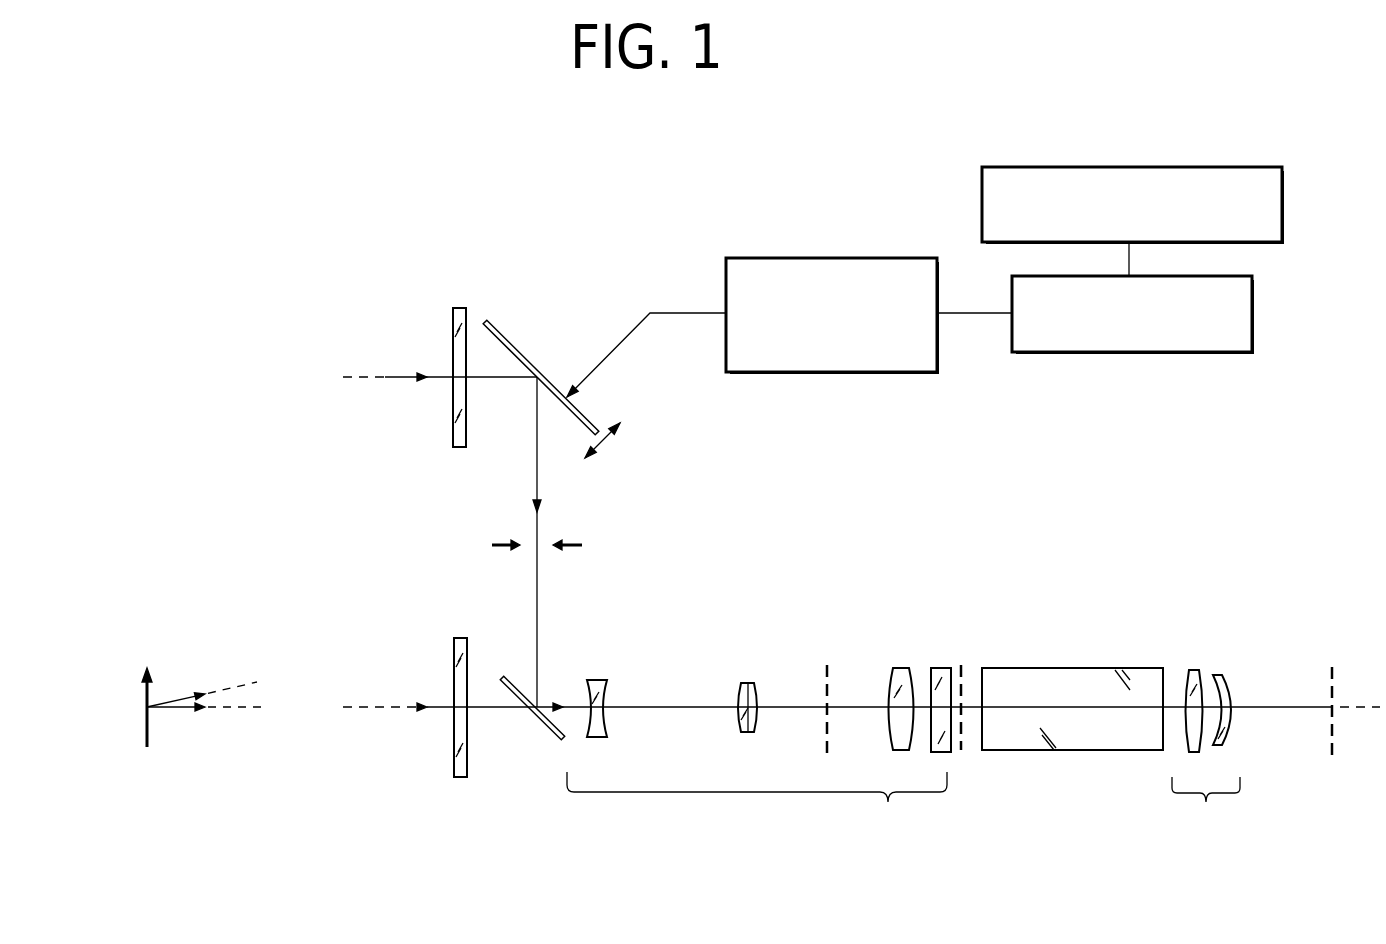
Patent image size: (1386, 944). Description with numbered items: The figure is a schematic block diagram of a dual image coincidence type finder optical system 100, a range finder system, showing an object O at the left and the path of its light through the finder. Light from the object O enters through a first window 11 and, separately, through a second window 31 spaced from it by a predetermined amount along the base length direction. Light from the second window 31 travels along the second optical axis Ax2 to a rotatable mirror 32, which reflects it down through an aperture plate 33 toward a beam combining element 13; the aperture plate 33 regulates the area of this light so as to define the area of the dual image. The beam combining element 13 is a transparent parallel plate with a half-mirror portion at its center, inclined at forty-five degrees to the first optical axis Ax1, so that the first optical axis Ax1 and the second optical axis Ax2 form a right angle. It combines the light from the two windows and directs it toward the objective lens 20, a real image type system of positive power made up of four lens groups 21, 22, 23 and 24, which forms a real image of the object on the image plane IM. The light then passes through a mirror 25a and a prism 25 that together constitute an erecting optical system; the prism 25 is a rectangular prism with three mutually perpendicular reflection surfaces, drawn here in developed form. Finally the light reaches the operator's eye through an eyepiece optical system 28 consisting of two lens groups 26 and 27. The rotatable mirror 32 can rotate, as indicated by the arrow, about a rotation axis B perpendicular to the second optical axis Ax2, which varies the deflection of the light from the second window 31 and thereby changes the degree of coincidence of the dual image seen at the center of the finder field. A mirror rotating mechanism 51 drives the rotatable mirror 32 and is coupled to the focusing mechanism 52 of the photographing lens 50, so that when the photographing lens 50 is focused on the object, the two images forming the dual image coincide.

The first window 11 is at (454, 757).
The beam combining element 13 is at (550, 730).
The objective lens 20 is at (757, 801).
The lens group 21 is at (597, 680).
The lens group 22 is at (747, 683).
The lens group 23 is at (900, 668).
The lens group 24 is at (943, 668).
The prism 25 is at (1058, 668).
The mirror 25a is at (827, 665).
The lens group 26 is at (1195, 670).
The lens group 27 is at (1227, 675).
The eyepiece optical system 28 is at (1206, 806).
The second window 31 is at (458, 308).
The rotatable mirror 32 is at (510, 340).
The aperture plate 33 is at (578, 545).
The photographing lens 50 is at (1282, 215).
The mirror rotating mechanism 51 is at (813, 258).
The focusing mechanism 52 is at (1252, 323).
The finder optical system 100 is at (1310, 444).
The first optical axis Ax1 is at (667, 698).
The second optical axis Ax2 is at (522, 477).
The rotation axis B is at (519, 398).
The image plane IM is at (961, 753).
The object O is at (145, 727).